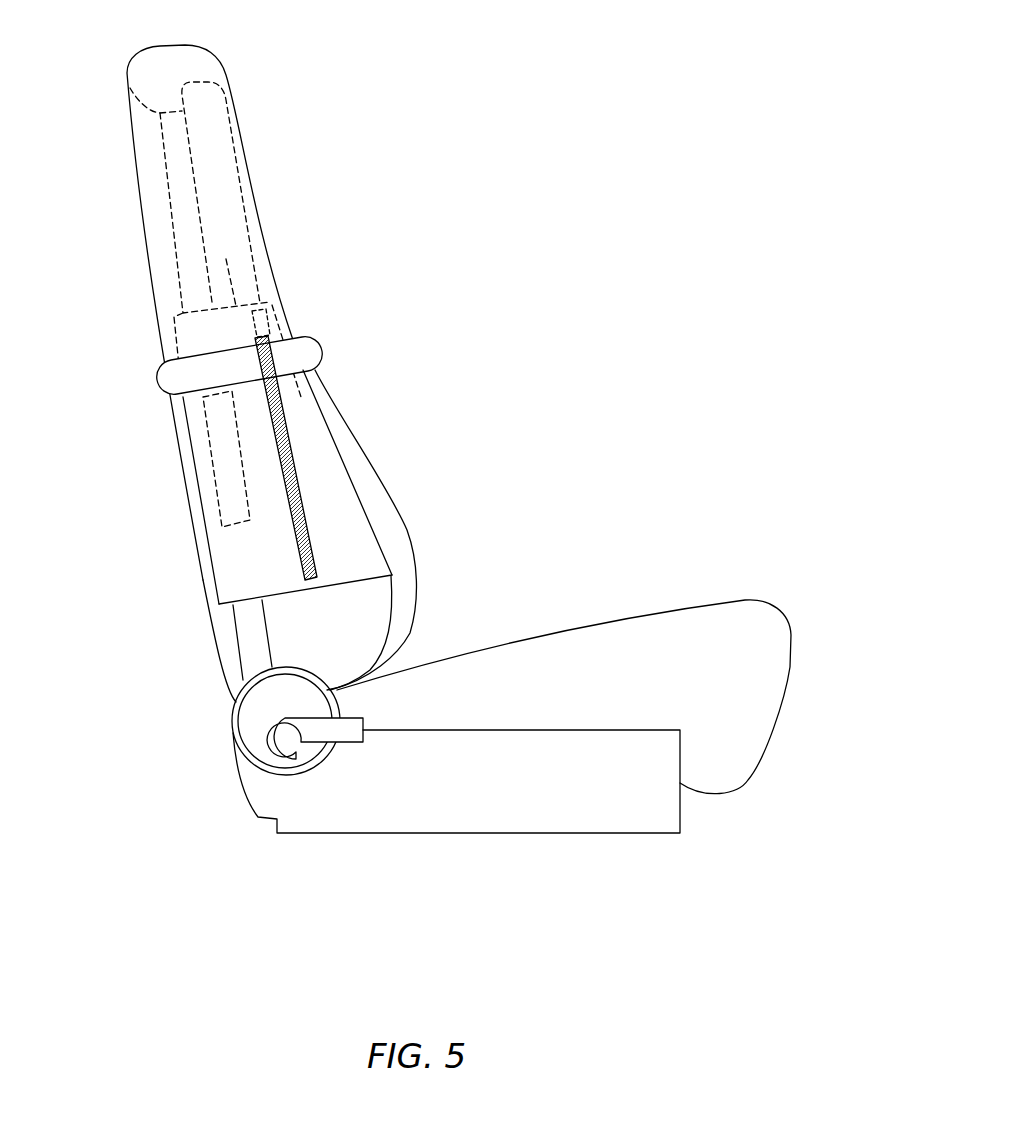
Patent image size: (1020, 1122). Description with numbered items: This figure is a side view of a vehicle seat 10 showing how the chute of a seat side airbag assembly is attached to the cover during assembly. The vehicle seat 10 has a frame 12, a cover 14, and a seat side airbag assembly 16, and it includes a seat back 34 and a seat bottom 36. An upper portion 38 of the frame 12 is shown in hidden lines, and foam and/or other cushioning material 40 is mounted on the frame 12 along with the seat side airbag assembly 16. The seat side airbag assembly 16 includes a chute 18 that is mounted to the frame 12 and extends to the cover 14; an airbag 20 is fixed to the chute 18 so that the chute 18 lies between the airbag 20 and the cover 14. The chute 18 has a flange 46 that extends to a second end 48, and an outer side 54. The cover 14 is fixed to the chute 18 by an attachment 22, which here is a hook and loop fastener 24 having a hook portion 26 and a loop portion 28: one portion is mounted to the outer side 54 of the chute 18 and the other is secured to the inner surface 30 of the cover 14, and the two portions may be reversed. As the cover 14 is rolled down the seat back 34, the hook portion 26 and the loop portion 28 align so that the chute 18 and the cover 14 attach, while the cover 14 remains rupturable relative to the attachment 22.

The vehicle seat 10 is at (659, 177).
The frame 12 is at (157, 158).
The cover 14 is at (88, 136).
The seat side airbag assembly 16 is at (135, 397).
The chute 18 is at (186, 426).
The airbag 20 is at (207, 466).
The attachment 22 is at (271, 325).
The hook and loop fastener 24 is at (229, 271).
The hook portion 26 is at (262, 357).
The loop portion 28 is at (297, 470).
The inner surface 30 is at (162, 376).
The seat back 34 is at (390, 348).
The seat bottom 36 is at (578, 615).
The upper portion 38 is at (130, 88).
The cushioning material 40 is at (234, 140).
The flange 46 is at (268, 526).
The second end 48 is at (360, 494).
The outer side 54 is at (343, 537).